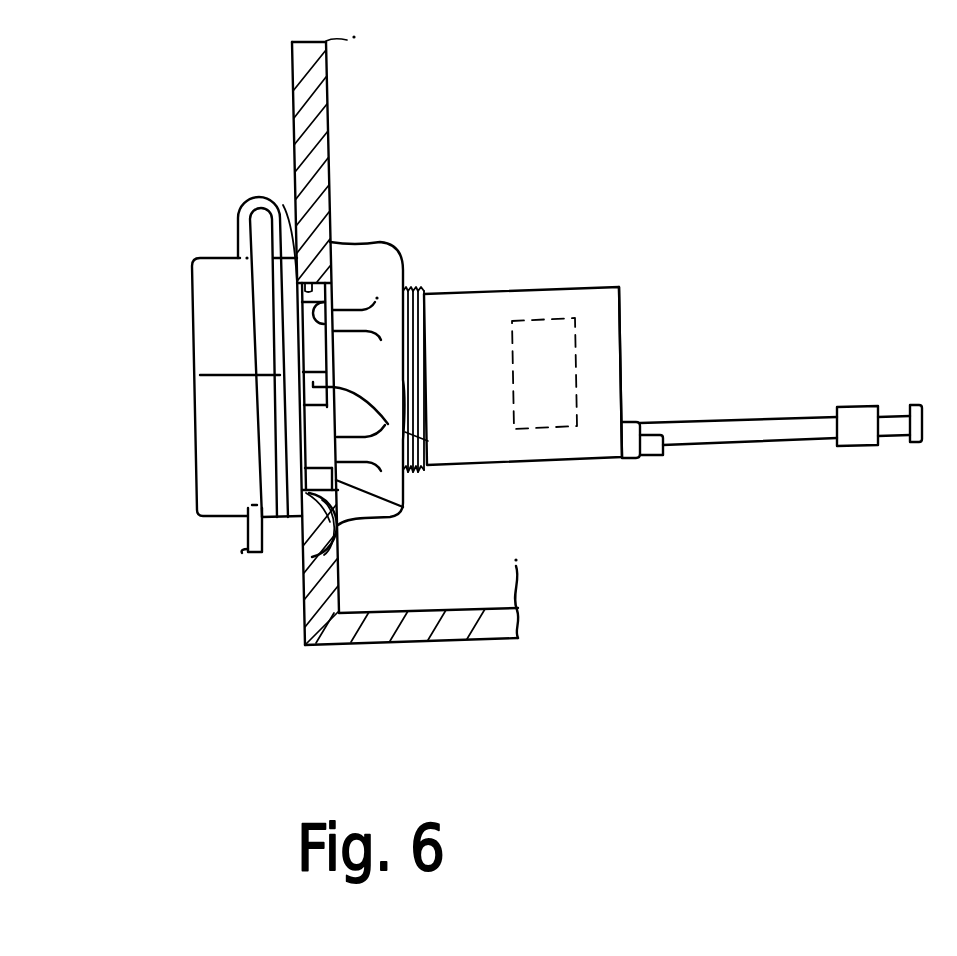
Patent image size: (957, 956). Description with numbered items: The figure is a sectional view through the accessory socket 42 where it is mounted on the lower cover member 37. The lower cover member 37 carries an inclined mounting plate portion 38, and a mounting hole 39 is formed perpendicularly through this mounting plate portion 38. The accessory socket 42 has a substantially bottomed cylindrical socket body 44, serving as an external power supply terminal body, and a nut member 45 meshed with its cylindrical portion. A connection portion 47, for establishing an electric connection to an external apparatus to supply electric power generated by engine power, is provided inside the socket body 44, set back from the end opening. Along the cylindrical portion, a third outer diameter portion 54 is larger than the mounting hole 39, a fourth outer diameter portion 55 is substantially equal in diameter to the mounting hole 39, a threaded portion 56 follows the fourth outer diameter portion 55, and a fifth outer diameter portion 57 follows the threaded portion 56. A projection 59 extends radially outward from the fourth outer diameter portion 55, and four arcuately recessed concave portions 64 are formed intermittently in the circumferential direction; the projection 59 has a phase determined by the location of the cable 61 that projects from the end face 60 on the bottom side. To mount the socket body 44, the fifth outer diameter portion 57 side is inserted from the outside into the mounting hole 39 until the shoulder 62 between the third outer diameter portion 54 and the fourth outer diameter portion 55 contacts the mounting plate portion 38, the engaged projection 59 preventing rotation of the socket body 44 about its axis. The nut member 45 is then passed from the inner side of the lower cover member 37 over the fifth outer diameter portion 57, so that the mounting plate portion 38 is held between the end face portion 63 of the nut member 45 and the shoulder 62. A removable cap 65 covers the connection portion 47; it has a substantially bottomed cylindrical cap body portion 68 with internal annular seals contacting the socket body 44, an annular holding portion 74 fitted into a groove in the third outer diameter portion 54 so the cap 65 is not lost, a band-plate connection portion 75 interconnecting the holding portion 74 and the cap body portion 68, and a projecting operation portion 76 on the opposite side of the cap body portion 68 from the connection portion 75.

The lower cover member 37 is at (376, 381).
The mounting plate portion 38 is at (305, 618).
The mounting hole 39 is at (327, 208).
The accessory socket 42 is at (558, 329).
The socket body 44 is at (607, 287).
The nut member 45 is at (390, 256).
The connection portion 47 is at (512, 356).
The third outer diameter portion 54 is at (283, 205).
The fourth outer diameter portion 55 is at (403, 507).
The threaded portion 56 is at (412, 288).
The fifth outer diameter portion 57 is at (553, 437).
The projection 59 is at (428, 441).
The end face 60 is at (619, 340).
The cable 61 is at (738, 413).
The shoulder 62 is at (312, 512).
The end face portion 63 is at (341, 557).
The arcuately recessed concave portions 64 is at (341, 283).
The cap 65 is at (192, 267).
The cap body portion 68 is at (213, 505).
The holding portion 74 is at (200, 375).
The connection portion 75 is at (251, 205).
The operation portion 76 is at (244, 548).